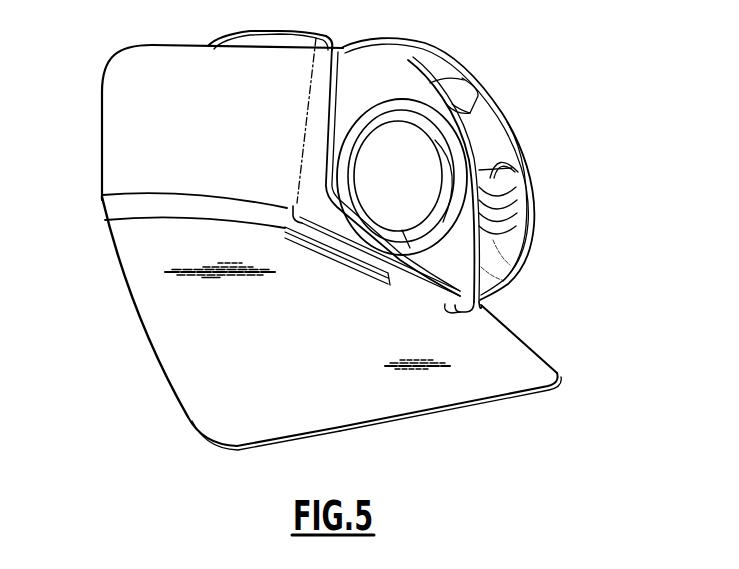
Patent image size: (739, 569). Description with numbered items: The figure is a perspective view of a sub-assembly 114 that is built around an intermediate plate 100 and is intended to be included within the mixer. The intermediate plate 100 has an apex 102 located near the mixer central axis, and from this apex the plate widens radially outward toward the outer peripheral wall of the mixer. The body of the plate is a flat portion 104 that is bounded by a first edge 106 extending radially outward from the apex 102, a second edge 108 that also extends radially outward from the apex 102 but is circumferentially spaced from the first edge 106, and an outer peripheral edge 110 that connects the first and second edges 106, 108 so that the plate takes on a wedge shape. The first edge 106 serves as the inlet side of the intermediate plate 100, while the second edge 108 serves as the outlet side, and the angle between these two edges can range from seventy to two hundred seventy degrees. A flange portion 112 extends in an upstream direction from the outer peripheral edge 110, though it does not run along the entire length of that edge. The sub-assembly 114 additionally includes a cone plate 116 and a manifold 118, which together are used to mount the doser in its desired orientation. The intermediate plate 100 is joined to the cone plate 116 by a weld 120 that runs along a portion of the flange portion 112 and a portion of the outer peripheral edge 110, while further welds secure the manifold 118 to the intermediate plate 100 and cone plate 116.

The intermediate plate 100 is at (417, 427).
The apex 102 is at (214, 441).
The flat portion 104 is at (288, 362).
The first edge 106 is at (497, 403).
The second edge 108 is at (158, 364).
The outer peripheral edge 110 is at (524, 343).
The flange portion 112 is at (124, 109).
The sub-assembly 114 is at (586, 79).
The cone plate 116 is at (360, 80).
The manifold 118 is at (500, 143).
The weld 120 is at (332, 93).